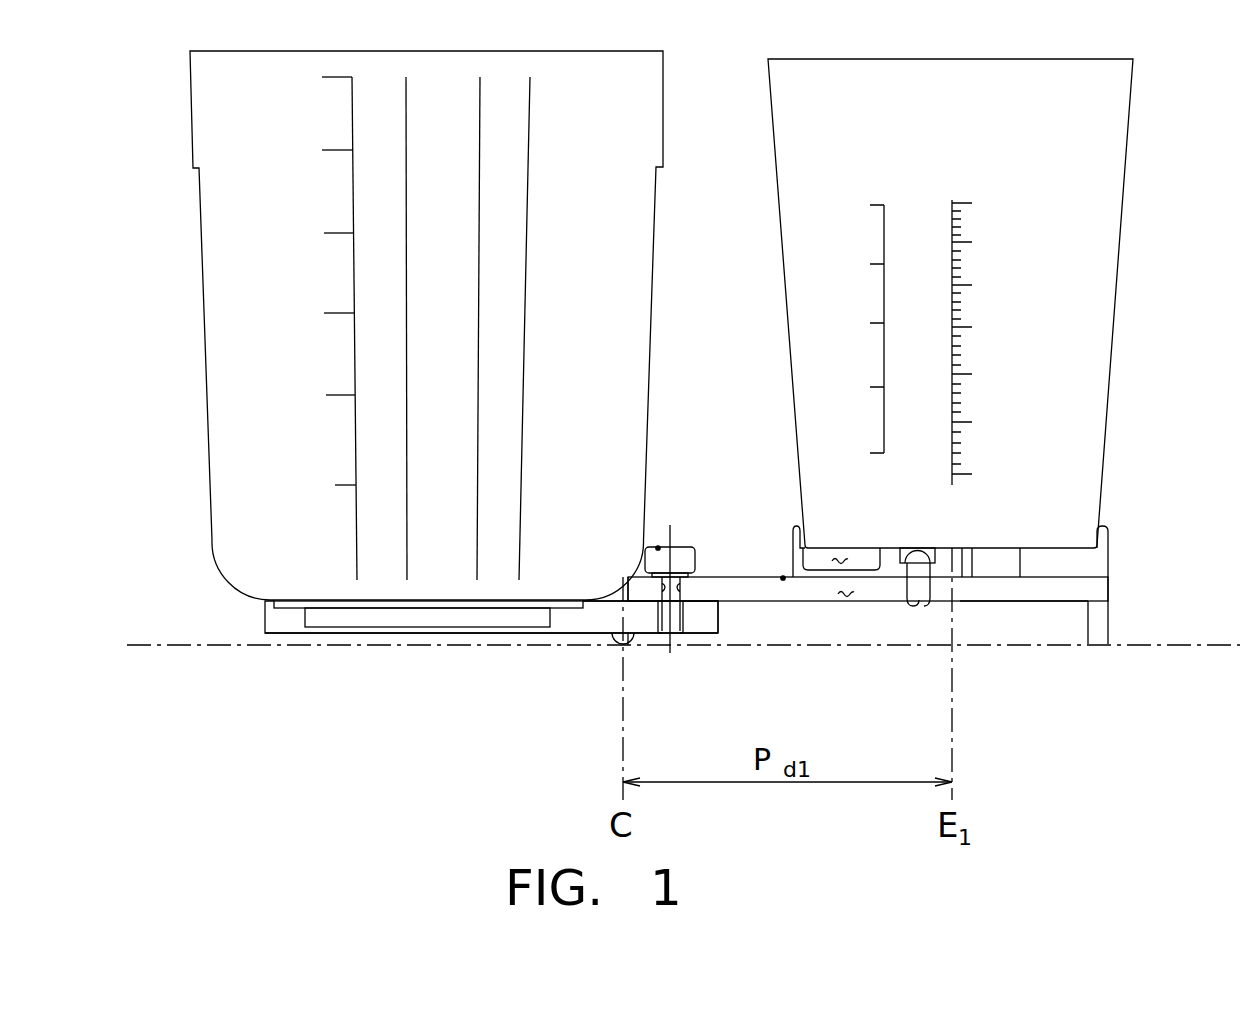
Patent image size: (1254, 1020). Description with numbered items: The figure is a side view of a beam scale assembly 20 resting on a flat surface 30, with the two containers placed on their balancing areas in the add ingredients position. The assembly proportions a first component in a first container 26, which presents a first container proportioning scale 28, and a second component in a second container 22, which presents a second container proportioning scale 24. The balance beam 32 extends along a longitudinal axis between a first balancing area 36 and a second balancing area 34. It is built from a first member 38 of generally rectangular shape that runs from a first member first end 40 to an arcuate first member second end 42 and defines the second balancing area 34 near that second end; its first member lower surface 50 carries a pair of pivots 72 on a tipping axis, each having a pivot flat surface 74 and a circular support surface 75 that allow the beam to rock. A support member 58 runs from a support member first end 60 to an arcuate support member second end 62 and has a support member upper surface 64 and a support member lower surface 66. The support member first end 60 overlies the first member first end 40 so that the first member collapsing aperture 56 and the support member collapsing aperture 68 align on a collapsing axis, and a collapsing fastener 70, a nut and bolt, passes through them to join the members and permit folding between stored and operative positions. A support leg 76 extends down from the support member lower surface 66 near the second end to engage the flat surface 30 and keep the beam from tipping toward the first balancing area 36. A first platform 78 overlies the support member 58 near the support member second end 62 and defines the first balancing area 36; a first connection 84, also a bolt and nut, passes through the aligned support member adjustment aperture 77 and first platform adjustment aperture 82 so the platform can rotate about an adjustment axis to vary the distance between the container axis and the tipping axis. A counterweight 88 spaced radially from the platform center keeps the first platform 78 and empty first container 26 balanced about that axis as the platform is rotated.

The beam scale assembly 20 is at (669, 572).
The second container 22 is at (200, 235).
The second container proportioning scale 24 is at (290, 272).
The first container 26 is at (1124, 187).
The first container proportioning scale 28 is at (1015, 285).
The flat surface 30 is at (157, 645).
The balance beam 32 is at (773, 603).
The second balancing area 34 is at (350, 607).
The first balancing area 36 is at (1018, 547).
The first member 38 is at (385, 634).
The first member first end 40 is at (720, 630).
The first member second end 42 is at (265, 610).
The first member lower surface 50 is at (283, 633).
The first member collapsing aperture 56 is at (665, 640).
The support member 58 is at (848, 598).
The support member first end 60 is at (628, 577).
The support member second end 62 is at (1110, 590).
The support member upper surface 64 is at (783, 577).
The support member lower surface 66 is at (1036, 603).
The support member collapsing aperture 68 is at (673, 580).
The collapsing fastener 70 is at (658, 547).
The pivot 72 is at (620, 648).
The pivot flat surface 74 is at (618, 644).
The circular support surface 75 is at (628, 646).
The support leg 76 is at (1110, 627).
The support member adjustment aperture 77 is at (913, 608).
The first platform 78 is at (1110, 540).
The first platform adjustment aperture 82 is at (932, 552).
The first connection 84 is at (907, 553).
The counterweight 88 is at (838, 555).